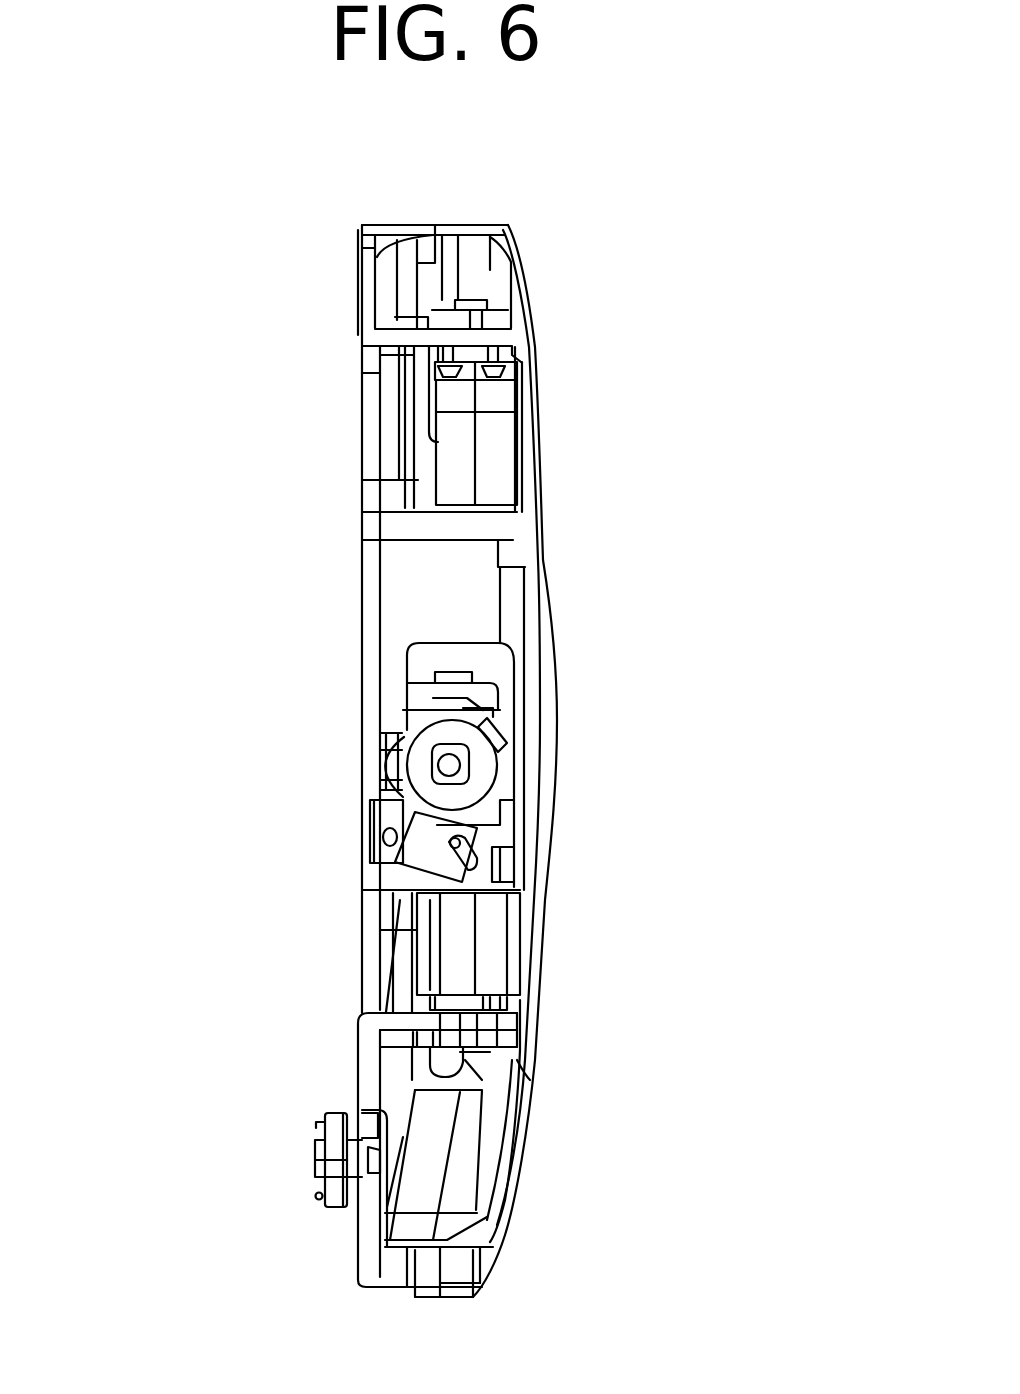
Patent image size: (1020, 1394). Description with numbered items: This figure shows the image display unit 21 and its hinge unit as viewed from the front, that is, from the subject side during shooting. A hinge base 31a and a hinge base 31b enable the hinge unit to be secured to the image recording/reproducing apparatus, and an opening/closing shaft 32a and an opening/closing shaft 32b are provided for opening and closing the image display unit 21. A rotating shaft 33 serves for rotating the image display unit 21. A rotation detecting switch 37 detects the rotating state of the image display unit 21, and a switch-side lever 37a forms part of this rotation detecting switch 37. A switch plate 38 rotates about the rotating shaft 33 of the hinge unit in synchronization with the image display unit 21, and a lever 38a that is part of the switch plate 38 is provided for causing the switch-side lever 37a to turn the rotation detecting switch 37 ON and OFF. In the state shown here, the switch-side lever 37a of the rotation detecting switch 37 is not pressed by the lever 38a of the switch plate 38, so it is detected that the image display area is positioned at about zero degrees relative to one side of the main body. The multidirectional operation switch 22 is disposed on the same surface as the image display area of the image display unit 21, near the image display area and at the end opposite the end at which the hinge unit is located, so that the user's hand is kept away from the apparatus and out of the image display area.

The image display unit 21 is at (480, 1127).
The multidirectional operation switch 22 is at (308, 1210).
The hinge base 31a is at (357, 317).
The hinge base 31b is at (357, 1077).
The opening/closing shaft 32a is at (483, 457).
The opening/closing shaft 32b is at (463, 955).
The rotating shaft 33 is at (452, 768).
The rotation detecting switch 37 is at (413, 855).
The switch-side lever 37a is at (500, 830).
The switch plate 38 is at (432, 733).
The lever 38a is at (500, 727).